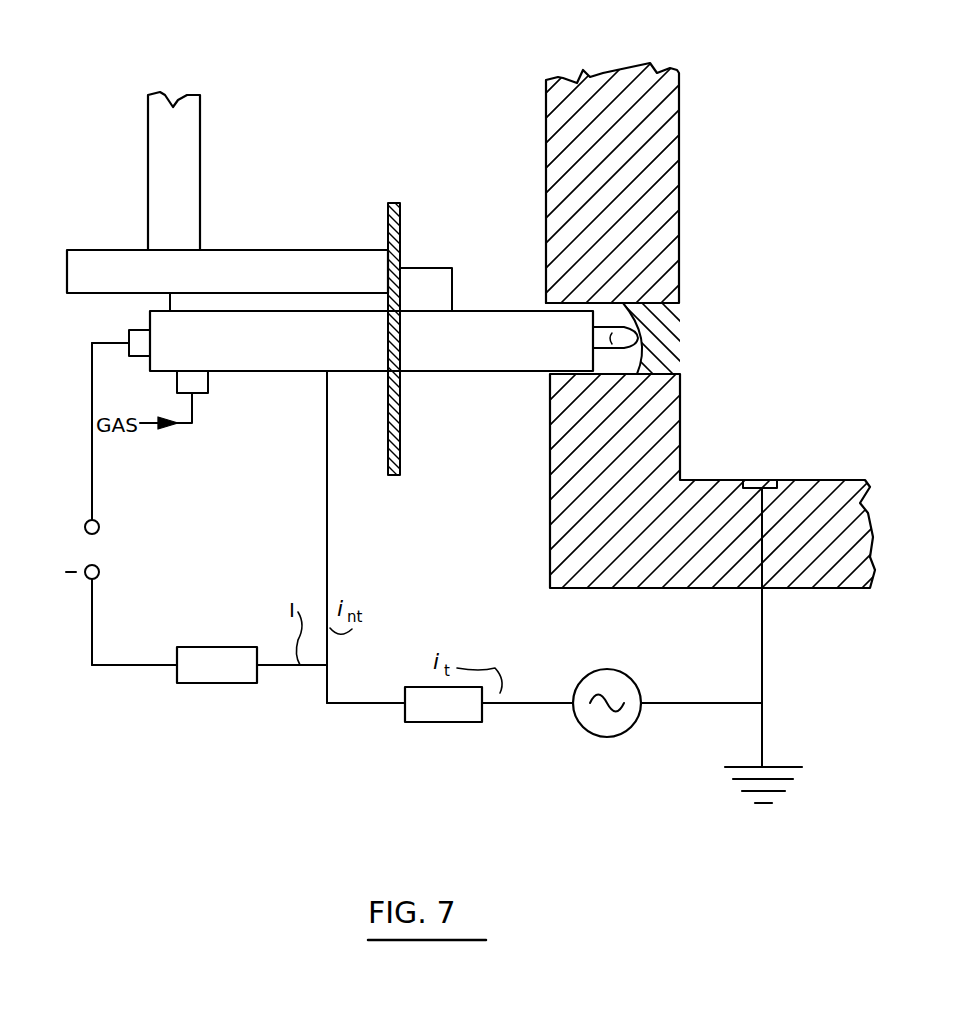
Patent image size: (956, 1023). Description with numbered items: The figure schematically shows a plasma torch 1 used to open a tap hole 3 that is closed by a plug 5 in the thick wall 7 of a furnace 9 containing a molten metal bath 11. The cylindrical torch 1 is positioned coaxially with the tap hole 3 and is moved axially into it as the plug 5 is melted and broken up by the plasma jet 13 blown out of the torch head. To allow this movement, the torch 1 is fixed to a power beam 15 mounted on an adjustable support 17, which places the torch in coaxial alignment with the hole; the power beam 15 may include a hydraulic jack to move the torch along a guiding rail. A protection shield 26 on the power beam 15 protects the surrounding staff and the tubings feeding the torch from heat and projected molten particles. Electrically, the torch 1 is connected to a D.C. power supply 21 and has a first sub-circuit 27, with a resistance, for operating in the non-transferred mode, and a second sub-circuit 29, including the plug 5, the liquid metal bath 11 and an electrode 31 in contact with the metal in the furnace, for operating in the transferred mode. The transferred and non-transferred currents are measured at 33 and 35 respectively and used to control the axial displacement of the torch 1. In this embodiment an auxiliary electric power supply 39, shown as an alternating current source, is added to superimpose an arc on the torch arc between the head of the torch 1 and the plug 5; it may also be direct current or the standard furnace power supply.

The plasma torch 1 is at (468, 382).
The tap hole 3 is at (548, 303).
The plug 5 is at (672, 355).
The thick wall 7 is at (658, 116).
The furnace 9 is at (502, 86).
The molten metal bath 11 is at (797, 387).
The plasma jet 13 is at (598, 352).
The power beam 15 is at (340, 258).
The support 17 is at (187, 120).
The D.C. power supply 21 is at (62, 555).
The protection shield 26 is at (398, 226).
The first sub-circuit 27 is at (232, 521).
The second sub-circuit 29 is at (495, 593).
The electrode 31 is at (766, 480).
The transferred current measurement 33 is at (212, 685).
The non-transferred current measurement 35 is at (456, 723).
The auxiliary electric power supply 39 is at (630, 683).